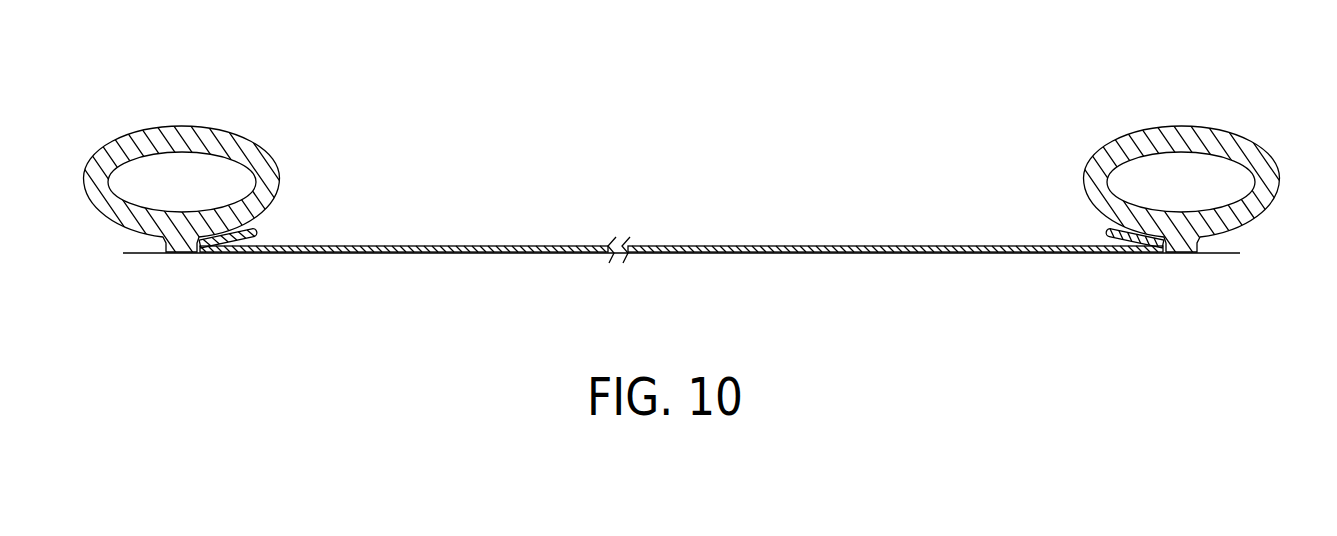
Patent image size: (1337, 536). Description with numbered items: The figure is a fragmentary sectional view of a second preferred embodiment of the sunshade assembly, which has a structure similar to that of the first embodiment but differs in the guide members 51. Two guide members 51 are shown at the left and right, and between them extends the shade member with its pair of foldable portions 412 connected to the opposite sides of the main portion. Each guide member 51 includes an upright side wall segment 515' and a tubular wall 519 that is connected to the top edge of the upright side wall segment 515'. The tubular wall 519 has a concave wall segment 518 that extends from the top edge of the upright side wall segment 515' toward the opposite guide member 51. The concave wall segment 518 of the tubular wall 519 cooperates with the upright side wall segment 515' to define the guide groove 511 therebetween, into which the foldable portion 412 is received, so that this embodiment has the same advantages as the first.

The guide member 51 is at (190, 100).
The guide groove 511 is at (1132, 243).
The concave wall segment 518 is at (1123, 210).
The tubular wall 519 is at (1260, 153).
The upright side wall segment 515' is at (1254, 270).
The foldable portion 412 is at (1133, 245).